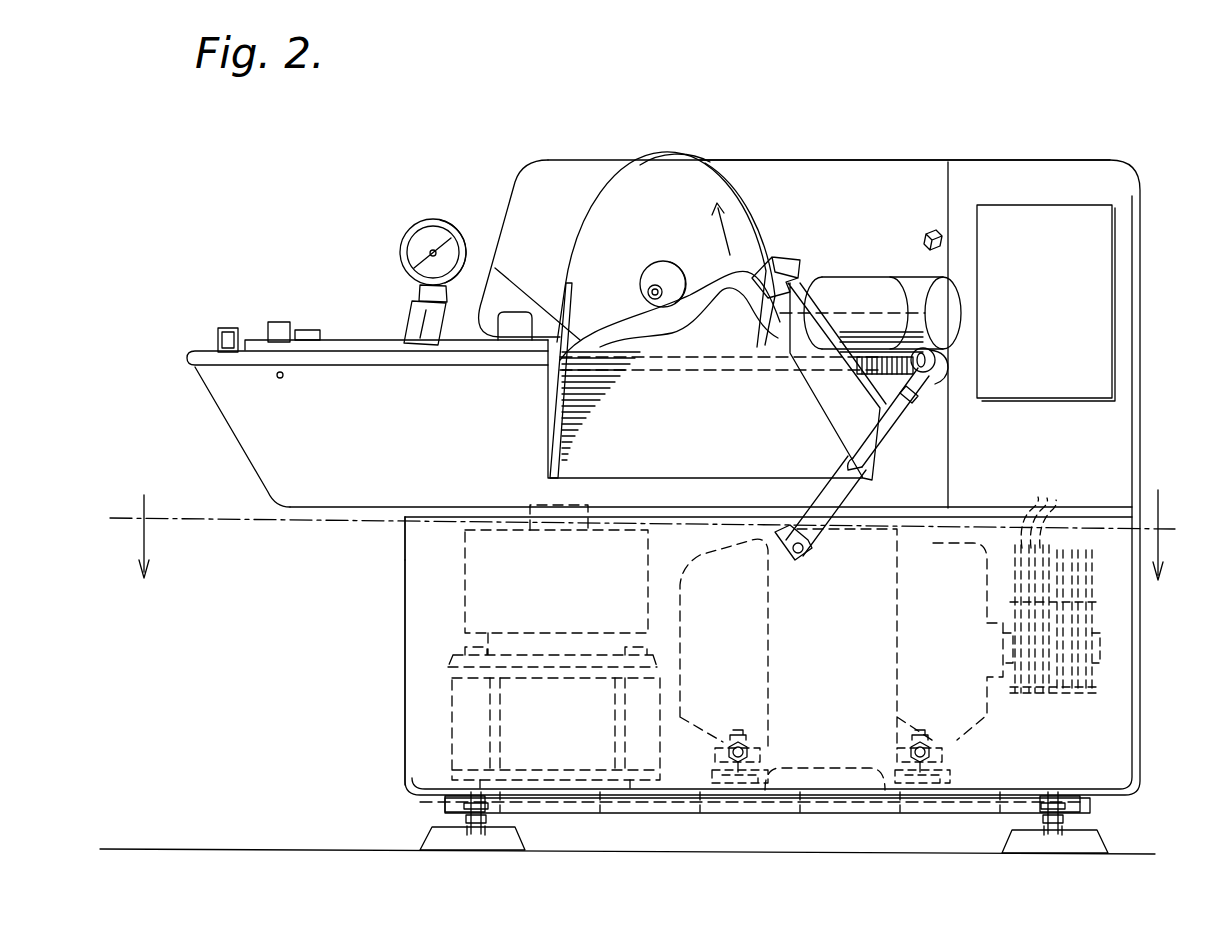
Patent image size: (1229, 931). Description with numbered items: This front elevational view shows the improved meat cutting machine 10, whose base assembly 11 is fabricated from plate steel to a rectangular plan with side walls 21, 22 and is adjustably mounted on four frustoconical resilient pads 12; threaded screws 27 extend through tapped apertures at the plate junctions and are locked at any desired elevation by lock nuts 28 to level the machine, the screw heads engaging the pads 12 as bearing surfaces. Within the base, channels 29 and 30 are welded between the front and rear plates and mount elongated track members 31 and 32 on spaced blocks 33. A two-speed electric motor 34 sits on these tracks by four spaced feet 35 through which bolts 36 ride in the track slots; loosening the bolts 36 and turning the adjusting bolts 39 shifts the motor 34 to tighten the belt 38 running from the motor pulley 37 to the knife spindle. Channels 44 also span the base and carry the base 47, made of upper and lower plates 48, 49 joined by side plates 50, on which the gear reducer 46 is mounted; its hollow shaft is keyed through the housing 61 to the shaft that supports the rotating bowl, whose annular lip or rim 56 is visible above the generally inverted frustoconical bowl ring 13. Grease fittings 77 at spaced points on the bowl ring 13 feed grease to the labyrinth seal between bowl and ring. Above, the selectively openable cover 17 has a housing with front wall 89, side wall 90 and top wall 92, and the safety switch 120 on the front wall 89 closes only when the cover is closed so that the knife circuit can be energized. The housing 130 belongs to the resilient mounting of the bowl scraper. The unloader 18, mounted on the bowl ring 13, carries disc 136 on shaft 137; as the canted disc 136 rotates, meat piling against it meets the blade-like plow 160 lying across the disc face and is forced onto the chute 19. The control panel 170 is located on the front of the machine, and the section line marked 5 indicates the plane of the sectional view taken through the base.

The section line 5- 5 is at (644, 535).
The meat cutting machine 10 is at (416, 163).
The base assembly 11 is at (405, 620).
The frustoconical resilient pads 12 is at (435, 835).
The bowl ring 13 is at (222, 437).
The cover 17 is at (860, 172).
The unloader 18 is at (890, 258).
The chute 19 is at (595, 441).
The side wall 21 is at (405, 570).
The side wall 22 is at (1140, 597).
The threaded screws 27 is at (450, 814).
The lock nuts 28 is at (445, 798).
The channel 29 is at (696, 824).
The channel 30 is at (878, 825).
The track member 31 is at (950, 778).
The track member 32 is at (712, 775).
The spaced blocks 33 is at (870, 783).
The two-speed electric motor 34 is at (928, 552).
The feet 35 is at (715, 752).
The bolts 36 is at (738, 735).
The pulley 37 is at (1098, 686).
The belt 38 is at (1027, 518).
The bolts 39 is at (748, 756).
The channels 44 is at (585, 815).
The gear reducer 46 is at (465, 568).
The base 47 is at (462, 690).
The upper plate 48 is at (540, 645).
The lower plate 49 is at (598, 778).
The side plates 50 is at (475, 718).
The annular lip or rim 56 is at (200, 359).
The housing 61 is at (548, 500).
The grease fittings 77 is at (284, 378).
The front wall 89 is at (838, 200).
The side wall 90 is at (517, 192).
The top wall 92 is at (780, 160).
The safety switch 120 is at (932, 226).
The housing 130 is at (283, 320).
The disc 136 is at (668, 158).
The shaft 137 is at (645, 280).
The plow 160 is at (668, 332).
The control panel 170 is at (1050, 212).